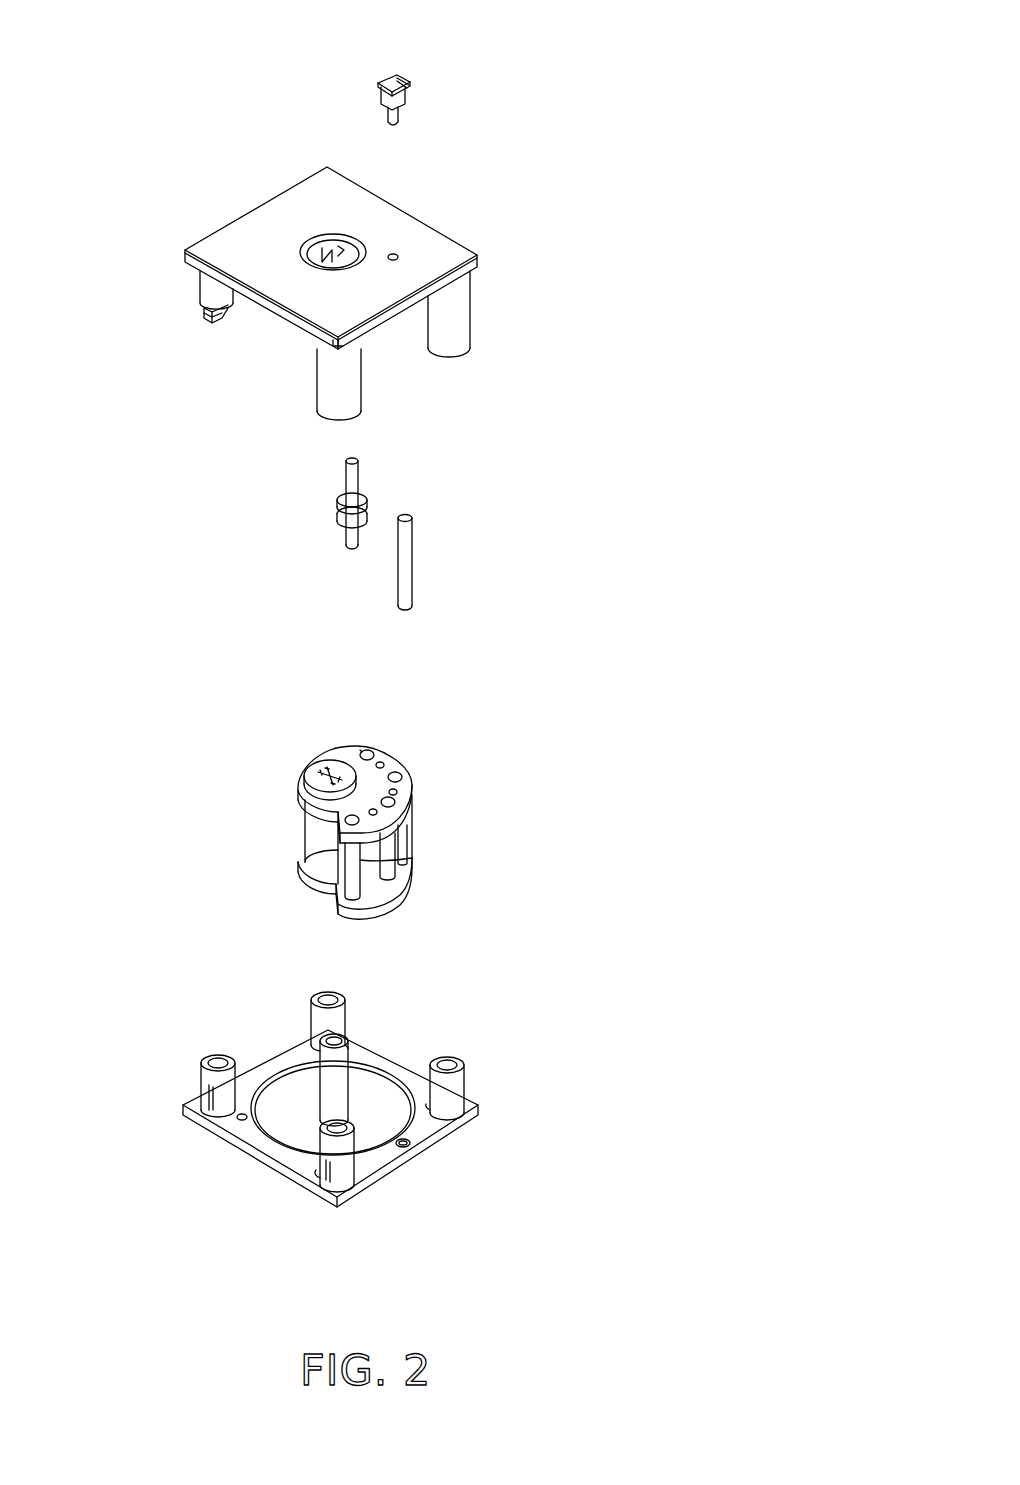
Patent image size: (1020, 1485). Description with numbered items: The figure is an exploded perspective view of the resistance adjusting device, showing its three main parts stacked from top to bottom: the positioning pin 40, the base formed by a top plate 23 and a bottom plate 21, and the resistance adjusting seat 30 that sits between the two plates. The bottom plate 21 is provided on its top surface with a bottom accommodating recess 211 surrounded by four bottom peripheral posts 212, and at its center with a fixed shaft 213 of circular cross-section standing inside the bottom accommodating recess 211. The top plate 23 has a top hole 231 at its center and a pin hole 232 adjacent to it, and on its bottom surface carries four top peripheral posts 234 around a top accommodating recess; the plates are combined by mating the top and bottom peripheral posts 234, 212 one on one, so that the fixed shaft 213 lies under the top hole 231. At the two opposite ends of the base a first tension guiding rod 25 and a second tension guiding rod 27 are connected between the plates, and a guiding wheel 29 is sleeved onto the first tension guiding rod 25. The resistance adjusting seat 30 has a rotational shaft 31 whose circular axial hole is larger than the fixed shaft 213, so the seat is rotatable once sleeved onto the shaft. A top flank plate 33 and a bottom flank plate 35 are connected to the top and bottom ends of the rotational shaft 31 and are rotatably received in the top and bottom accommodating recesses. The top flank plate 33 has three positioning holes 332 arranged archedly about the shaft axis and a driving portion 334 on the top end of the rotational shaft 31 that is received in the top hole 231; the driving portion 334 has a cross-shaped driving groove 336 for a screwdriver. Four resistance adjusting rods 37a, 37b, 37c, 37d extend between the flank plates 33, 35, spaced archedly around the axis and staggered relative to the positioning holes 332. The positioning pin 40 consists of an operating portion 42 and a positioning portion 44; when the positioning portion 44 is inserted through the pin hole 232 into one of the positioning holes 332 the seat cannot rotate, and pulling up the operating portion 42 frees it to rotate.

The bottom plate 21 is at (361, 1134).
The bottom accommodating recess 211 is at (385, 1115).
The bottom peripheral posts 212 is at (347, 1172).
The fixed shaft 213 is at (340, 1078).
The top plate 23 is at (383, 276).
The top hole 231 is at (305, 247).
The pin hole 232 is at (393, 254).
The top peripheral posts 234 is at (455, 323).
The first tension guiding rod 25 is at (350, 483).
The second tension guiding rod 27 is at (405, 565).
The guiding wheel 29 is at (345, 517).
The resistance adjusting seat 30 is at (374, 796).
The rotational shaft 31 is at (315, 845).
The top flank plate 33 is at (330, 770).
The positioning holes 332 is at (412, 805).
The driving portion 334 is at (265, 749).
The cross-shaped driving groove 336 is at (332, 768).
The bottom flank plate 35 is at (300, 873).
The resistance adjusting rod 37a is at (352, 887).
The resistance adjusting rod 37b is at (387, 870).
The resistance adjusting rod 37c is at (402, 835).
The resistance adjusting rod 37d is at (367, 750).
The positioning pin 40 is at (413, 70).
The operating portion 42 is at (390, 82).
The positioning portion 44 is at (395, 118).